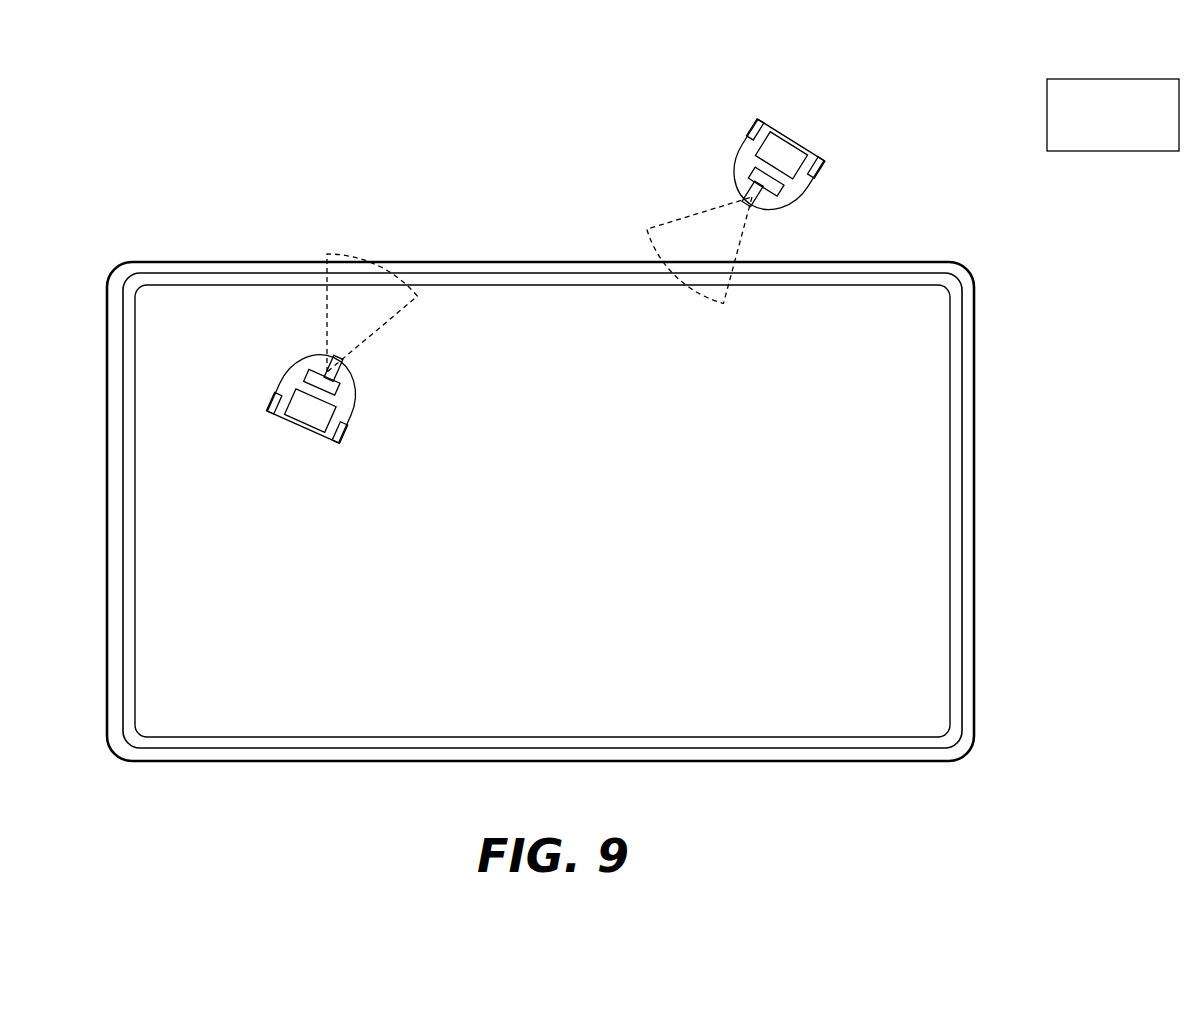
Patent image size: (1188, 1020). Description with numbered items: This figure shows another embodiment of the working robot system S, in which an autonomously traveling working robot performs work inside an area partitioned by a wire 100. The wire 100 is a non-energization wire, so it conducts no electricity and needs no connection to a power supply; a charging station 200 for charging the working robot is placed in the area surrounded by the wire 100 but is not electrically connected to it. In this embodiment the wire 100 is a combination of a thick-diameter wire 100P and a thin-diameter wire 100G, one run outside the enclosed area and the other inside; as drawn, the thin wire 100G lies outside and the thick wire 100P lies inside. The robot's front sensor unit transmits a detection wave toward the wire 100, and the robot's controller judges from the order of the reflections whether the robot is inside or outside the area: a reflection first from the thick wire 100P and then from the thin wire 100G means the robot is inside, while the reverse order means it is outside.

The working robot system S is at (98, 249).
The wire 100 is at (610, 511).
The thin wire 100G is at (974, 428).
The thick wire 100P is at (962, 488).
The charging station 200 is at (1047, 115).